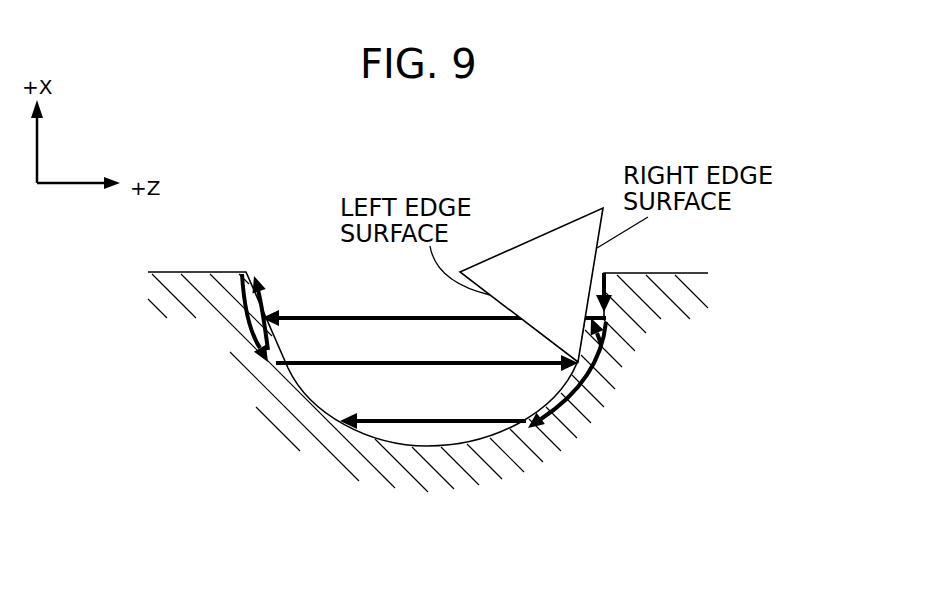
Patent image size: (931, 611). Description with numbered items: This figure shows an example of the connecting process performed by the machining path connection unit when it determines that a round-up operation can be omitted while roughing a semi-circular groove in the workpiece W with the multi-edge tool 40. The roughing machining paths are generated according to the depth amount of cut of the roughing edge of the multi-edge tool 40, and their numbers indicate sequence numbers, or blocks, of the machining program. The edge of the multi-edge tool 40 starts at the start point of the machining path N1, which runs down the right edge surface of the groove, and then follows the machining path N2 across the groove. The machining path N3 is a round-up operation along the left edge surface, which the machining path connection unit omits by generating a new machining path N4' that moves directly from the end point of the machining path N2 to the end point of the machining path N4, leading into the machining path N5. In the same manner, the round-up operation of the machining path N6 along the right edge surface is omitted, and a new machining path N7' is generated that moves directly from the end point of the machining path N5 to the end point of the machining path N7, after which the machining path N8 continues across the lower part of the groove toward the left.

The multi-edge tool 40 is at (535, 238).
The workpiece W is at (427, 492).
The machining path N1 is at (620, 292).
The machining path N2 is at (392, 307).
The machining path N3 is at (276, 313).
The machining path N4 is at (234, 318).
The machining path N4' is at (379, 346).
The machining path N5 is at (529, 355).
The machining path N6 is at (594, 338).
The machining path N7 is at (575, 375).
The machining path N7' is at (450, 397).
The machining path N8 is at (392, 413).